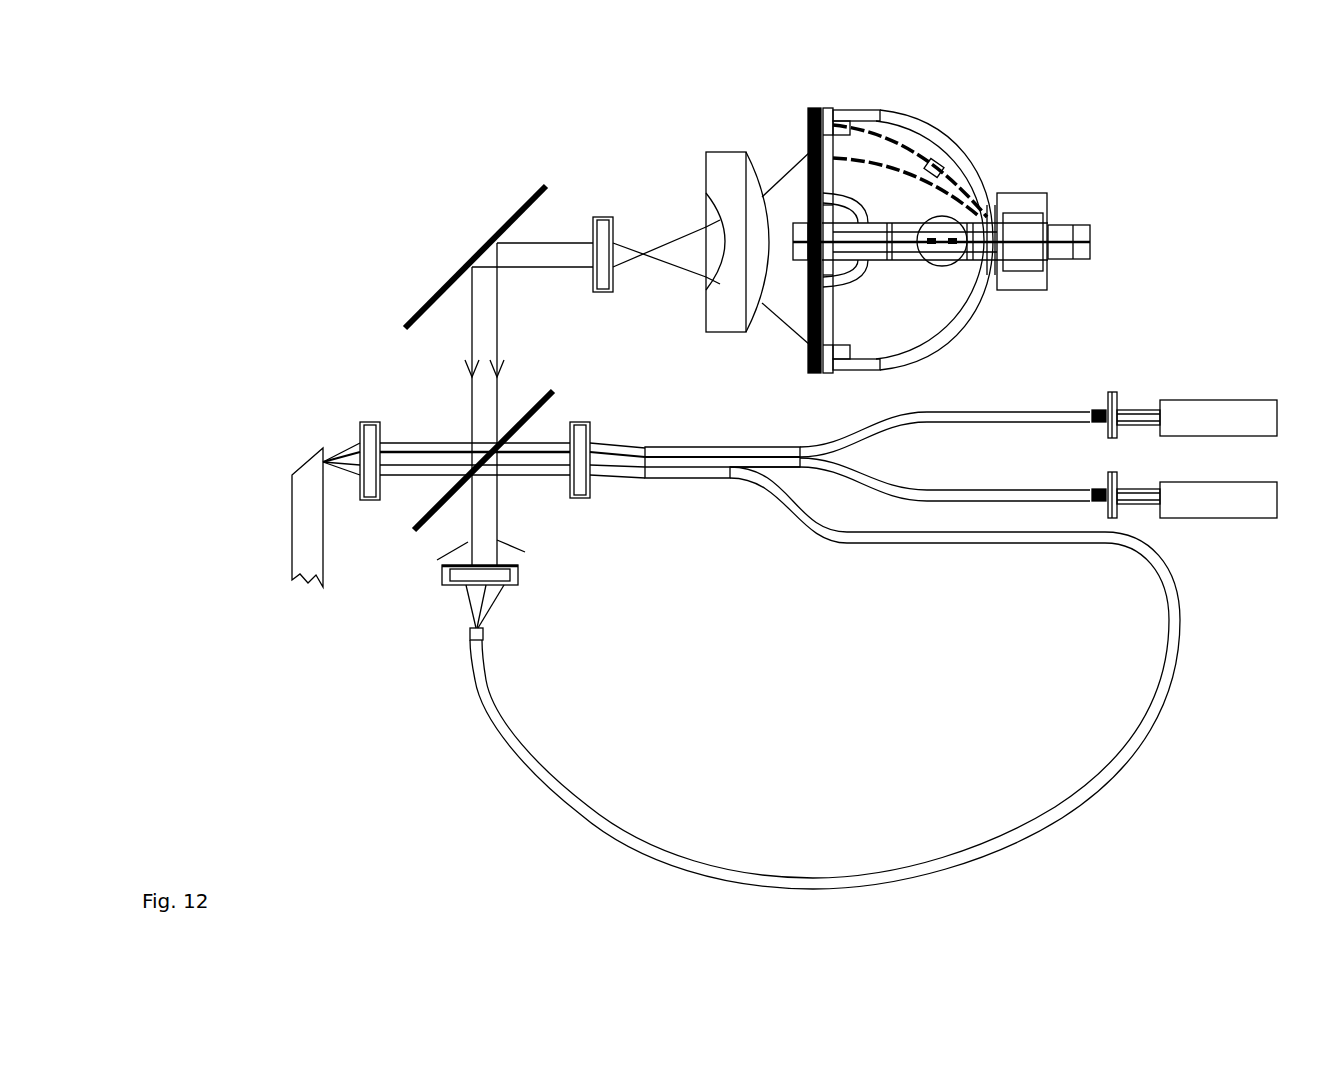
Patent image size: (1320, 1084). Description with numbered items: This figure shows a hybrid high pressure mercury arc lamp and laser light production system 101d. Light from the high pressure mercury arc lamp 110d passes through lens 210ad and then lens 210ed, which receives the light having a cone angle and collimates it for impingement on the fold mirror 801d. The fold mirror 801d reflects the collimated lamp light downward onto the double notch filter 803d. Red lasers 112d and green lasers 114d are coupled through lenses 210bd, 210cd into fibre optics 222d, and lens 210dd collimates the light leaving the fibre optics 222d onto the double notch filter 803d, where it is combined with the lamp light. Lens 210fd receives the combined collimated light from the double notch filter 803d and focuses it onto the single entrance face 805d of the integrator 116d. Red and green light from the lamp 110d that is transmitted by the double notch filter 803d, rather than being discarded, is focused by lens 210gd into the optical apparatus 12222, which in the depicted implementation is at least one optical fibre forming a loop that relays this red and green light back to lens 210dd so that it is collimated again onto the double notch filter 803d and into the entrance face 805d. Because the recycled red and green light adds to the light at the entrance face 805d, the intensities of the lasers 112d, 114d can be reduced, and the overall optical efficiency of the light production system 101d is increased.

The light production system 101d is at (296, 141).
The high pressure mercury arc lamp 110d is at (1010, 154).
The lens 210ad is at (718, 170).
The lens 210ed is at (600, 222).
The fold mirror 801d is at (517, 210).
The double notch filter 803d is at (557, 390).
The entrance face 805d is at (324, 437).
The integrator 116d is at (312, 555).
The lens 210fd is at (372, 423).
The lens 210dd is at (573, 435).
The lens 210gd is at (452, 582).
The fibre optics 222d is at (675, 445).
The lens 210bd is at (1107, 405).
The lens 210cd is at (1107, 487).
The red lasers 112d is at (1223, 417).
The green lasers 114d is at (1248, 502).
The optical apparatus 12222 is at (514, 736).